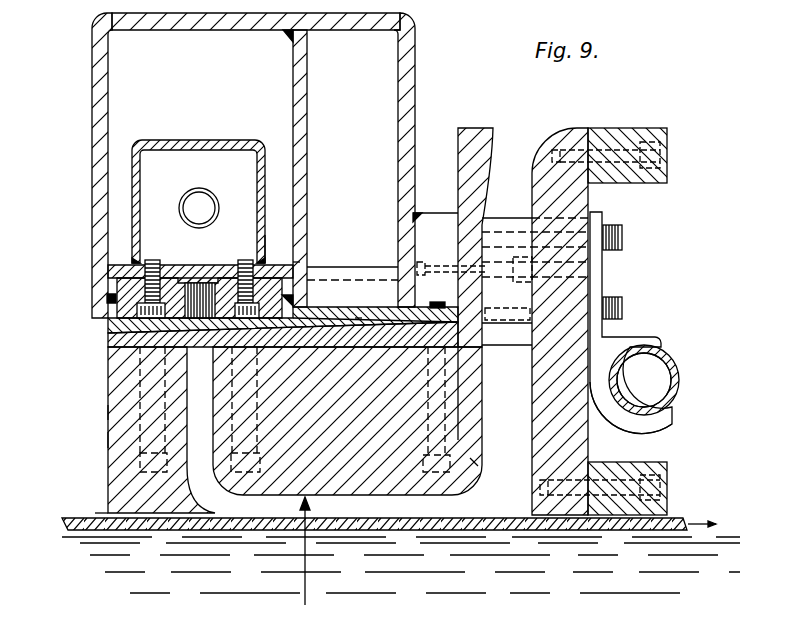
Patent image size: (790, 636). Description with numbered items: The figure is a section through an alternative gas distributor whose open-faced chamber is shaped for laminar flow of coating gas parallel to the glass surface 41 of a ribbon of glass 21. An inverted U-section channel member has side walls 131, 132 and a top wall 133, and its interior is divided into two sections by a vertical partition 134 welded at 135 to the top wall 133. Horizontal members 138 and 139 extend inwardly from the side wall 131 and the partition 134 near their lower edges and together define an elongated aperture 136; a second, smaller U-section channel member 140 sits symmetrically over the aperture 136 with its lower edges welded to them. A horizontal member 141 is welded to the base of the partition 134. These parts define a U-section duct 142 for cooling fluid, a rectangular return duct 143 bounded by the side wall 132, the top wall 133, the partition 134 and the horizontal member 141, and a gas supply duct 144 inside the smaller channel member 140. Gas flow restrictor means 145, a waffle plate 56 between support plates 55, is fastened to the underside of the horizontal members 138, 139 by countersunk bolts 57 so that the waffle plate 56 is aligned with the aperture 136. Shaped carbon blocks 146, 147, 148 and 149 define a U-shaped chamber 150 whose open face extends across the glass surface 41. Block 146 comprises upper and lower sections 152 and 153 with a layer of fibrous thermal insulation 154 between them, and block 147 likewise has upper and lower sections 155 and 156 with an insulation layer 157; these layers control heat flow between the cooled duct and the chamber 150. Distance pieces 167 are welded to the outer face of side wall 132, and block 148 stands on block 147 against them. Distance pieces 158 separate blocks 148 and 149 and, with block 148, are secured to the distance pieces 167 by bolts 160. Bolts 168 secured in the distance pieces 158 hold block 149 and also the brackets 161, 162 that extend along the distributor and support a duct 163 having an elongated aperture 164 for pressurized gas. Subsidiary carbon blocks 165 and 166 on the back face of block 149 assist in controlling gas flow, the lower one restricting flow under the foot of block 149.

The ribbon of glass 21 is at (88, 519).
The glass surface 41 is at (98, 515).
The support plates 55 is at (115, 291).
The waffle plate 56 is at (245, 272).
The countersunk bolts 57 is at (151, 260).
The side wall 131 is at (92, 128).
The side wall 132 is at (400, 67).
The top wall 133 is at (205, 22).
The vertical partition 134 is at (306, 74).
The weld 135 is at (290, 36).
The elongated aperture 136 is at (264, 252).
The horizontal member 138 is at (106, 266).
The horizontal member 139 is at (300, 262).
The second U-section channel member 140 is at (147, 140).
The horizontal member 141 is at (343, 312).
The U-section duct 142 is at (220, 106).
The rectangular return duct 143 is at (375, 151).
The gas supply duct 144 is at (206, 190).
The gas flow restrictor means 145 is at (192, 280).
The shaped carbon block 146 is at (106, 441).
The shaped carbon block 147 is at (305, 565).
The shaped carbon block 148 is at (480, 128).
The shaped carbon block 149 is at (560, 130).
The U-shaped chamber 150 is at (190, 383).
The upper section 152 is at (120, 324).
The lower section 153 is at (112, 414).
The layer of fibrous thermal insulation 154 is at (118, 341).
The upper section 155 is at (358, 326).
The lower section 156 is at (472, 462).
The layer of fibrous thermal insulation 157 is at (465, 337).
The distance pieces 158 is at (498, 222).
The bolts 160 is at (479, 288).
The mounting plate 161 is at (604, 276).
The brackets 162 is at (634, 340).
The duct 163 is at (665, 358).
The elongated aperture 164 is at (644, 380).
The subsidiary carbon block 165 is at (620, 138).
The subsidiary carbon block 166 is at (624, 470).
The distance pieces 167 is at (428, 212).
The bolts 168 is at (618, 236).